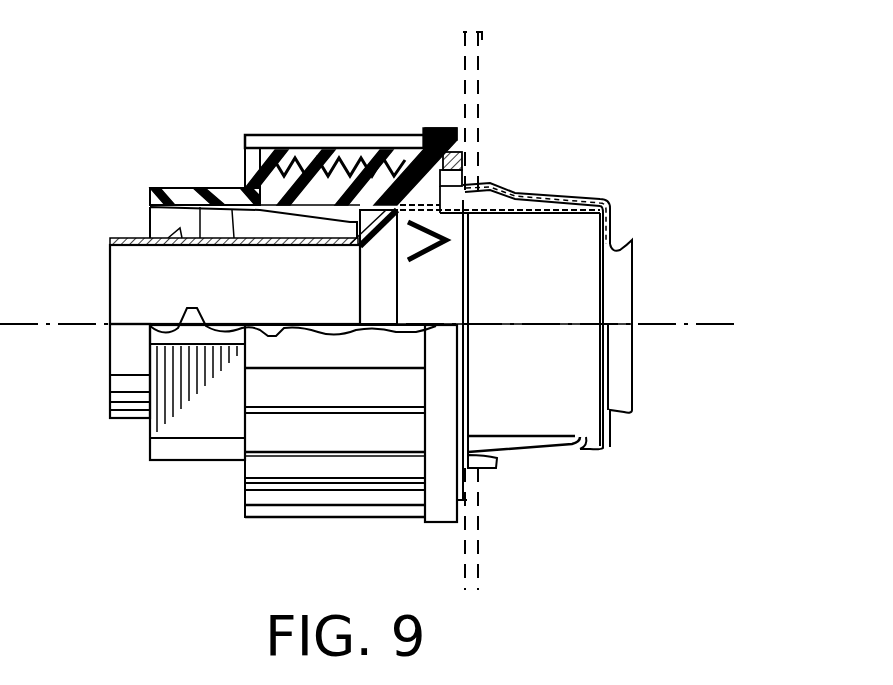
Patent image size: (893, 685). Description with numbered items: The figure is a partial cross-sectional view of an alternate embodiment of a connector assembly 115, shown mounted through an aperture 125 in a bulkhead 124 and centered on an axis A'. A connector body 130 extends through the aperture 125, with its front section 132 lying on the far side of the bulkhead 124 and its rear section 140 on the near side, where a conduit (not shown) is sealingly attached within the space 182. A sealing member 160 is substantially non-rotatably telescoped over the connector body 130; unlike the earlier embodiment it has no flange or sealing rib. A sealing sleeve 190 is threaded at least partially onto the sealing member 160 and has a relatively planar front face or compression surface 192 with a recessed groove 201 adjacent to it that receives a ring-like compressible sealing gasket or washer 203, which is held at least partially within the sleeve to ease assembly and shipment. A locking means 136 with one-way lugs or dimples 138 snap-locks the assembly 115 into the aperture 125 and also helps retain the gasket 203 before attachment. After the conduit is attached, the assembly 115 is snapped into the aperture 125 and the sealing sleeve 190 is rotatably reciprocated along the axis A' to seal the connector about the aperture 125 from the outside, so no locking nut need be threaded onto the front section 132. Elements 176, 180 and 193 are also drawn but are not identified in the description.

The connector assembly 115 is at (240, 124).
The bulkhead 124 is at (485, 33).
The aperture 125 is at (470, 192).
The connector body 130 is at (612, 190).
The front section 132 is at (570, 196).
The locking means 136 is at (510, 455).
The one way lugs or dimples 138 is at (494, 470).
The rear section 140 is at (142, 432).
The sealing member 160 is at (216, 180).
The striped sleeve 176 is at (200, 432).
The body 180 is at (233, 246).
The space 182 is at (168, 216).
The sealing sleeve 190 is at (360, 124).
The compression surface 192 is at (462, 146).
The thread 193 is at (306, 132).
The recessed groove 201 is at (462, 180).
The sealing gasket or washer 203 is at (462, 162).
The axis A is at (698, 318).